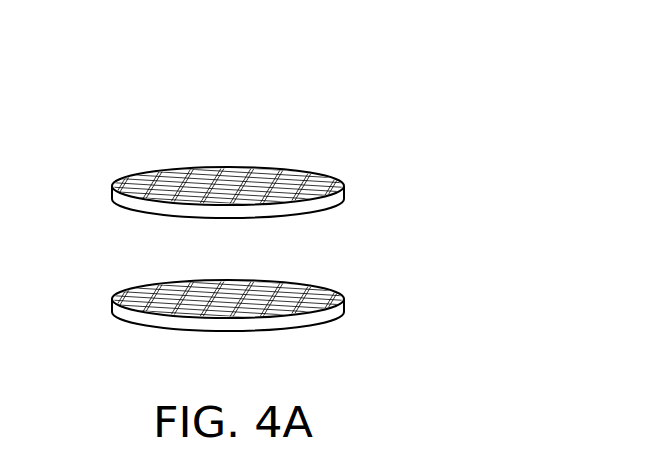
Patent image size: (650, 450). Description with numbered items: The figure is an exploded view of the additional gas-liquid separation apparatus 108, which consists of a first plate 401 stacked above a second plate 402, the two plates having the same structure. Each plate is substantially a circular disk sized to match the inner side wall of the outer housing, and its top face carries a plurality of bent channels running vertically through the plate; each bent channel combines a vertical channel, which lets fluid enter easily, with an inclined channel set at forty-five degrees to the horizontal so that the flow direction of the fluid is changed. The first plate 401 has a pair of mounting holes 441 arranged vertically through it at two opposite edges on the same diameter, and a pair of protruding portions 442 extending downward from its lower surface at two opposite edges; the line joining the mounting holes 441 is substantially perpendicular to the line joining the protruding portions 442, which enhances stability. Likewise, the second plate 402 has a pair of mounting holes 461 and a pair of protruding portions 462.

The additional gas-liquid separation apparatus 108 is at (524, 65).
The first plate 401 is at (344, 188).
The second plate 402 is at (345, 300).
The mounting holes 441 is at (140, 175).
The protruding portions 442 is at (172, 217).
The mounting holes 461 is at (170, 320).
The protruding portions 462 is at (140, 287).